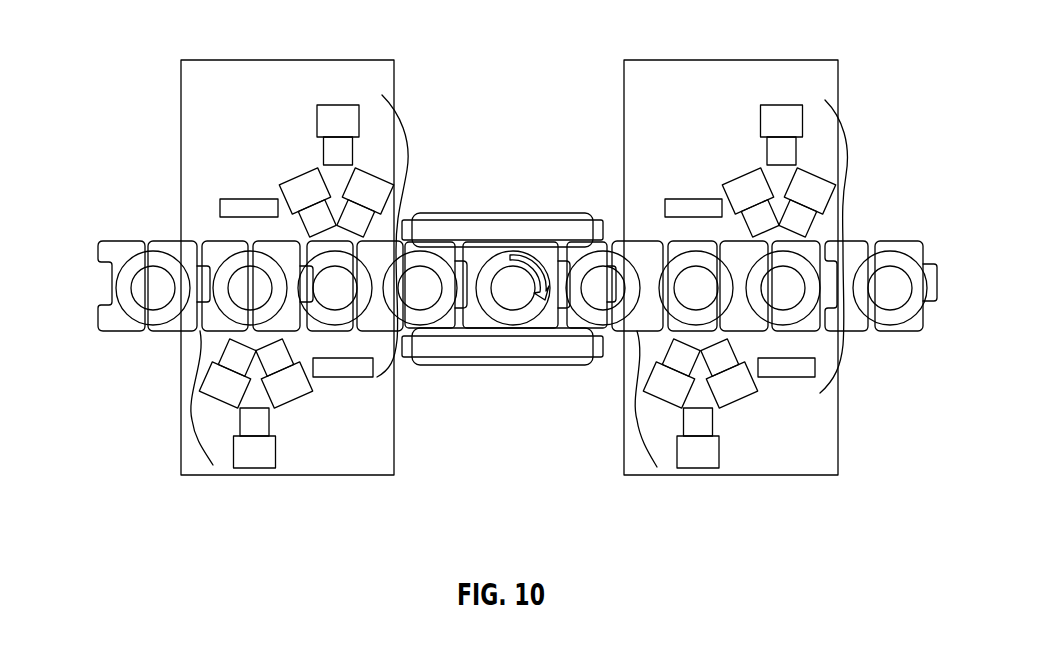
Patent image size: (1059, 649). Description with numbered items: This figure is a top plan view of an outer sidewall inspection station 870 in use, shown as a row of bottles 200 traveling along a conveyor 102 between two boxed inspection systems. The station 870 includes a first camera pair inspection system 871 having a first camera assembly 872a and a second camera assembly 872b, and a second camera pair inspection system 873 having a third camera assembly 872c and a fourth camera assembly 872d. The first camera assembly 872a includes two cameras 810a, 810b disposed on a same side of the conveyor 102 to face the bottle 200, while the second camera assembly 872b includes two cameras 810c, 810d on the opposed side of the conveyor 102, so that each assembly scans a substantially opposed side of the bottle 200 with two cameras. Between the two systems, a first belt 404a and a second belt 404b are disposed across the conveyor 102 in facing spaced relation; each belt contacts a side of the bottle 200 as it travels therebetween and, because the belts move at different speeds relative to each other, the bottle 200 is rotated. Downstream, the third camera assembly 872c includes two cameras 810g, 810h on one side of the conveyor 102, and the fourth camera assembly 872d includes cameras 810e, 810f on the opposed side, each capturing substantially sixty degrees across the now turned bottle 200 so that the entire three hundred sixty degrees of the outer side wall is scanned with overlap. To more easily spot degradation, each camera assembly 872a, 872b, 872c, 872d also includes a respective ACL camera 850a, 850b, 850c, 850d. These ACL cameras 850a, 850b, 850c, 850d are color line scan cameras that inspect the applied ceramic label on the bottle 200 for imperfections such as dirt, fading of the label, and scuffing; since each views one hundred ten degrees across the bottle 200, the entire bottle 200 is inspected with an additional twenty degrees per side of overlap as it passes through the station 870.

The conveyor 102 is at (112, 247).
The bottle 200 is at (497, 287).
The first belt 404a is at (548, 354).
The second belt 404b is at (553, 213).
The camera 810a is at (208, 394).
The camera 810b is at (297, 397).
The camera 810c is at (298, 176).
The camera 810d is at (379, 177).
The camera 810e is at (742, 176).
The camera 810f is at (825, 177).
The camera 810g is at (652, 394).
The camera 810h is at (742, 397).
The ACL camera 850a is at (275, 468).
The ACL camera 850b is at (337, 105).
The ACL camera 850c is at (718, 468).
The ACL camera 850d is at (780, 105).
The outer sidewall inspection station 870 is at (508, 434).
The first camera pair inspection system 871 is at (351, 485).
The first camera assembly 872a is at (192, 407).
The second camera assembly 872b is at (410, 150).
The third camera assembly 872c is at (633, 418).
The fourth camera assembly 872d is at (847, 160).
The second camera pair inspection system 873 is at (795, 485).